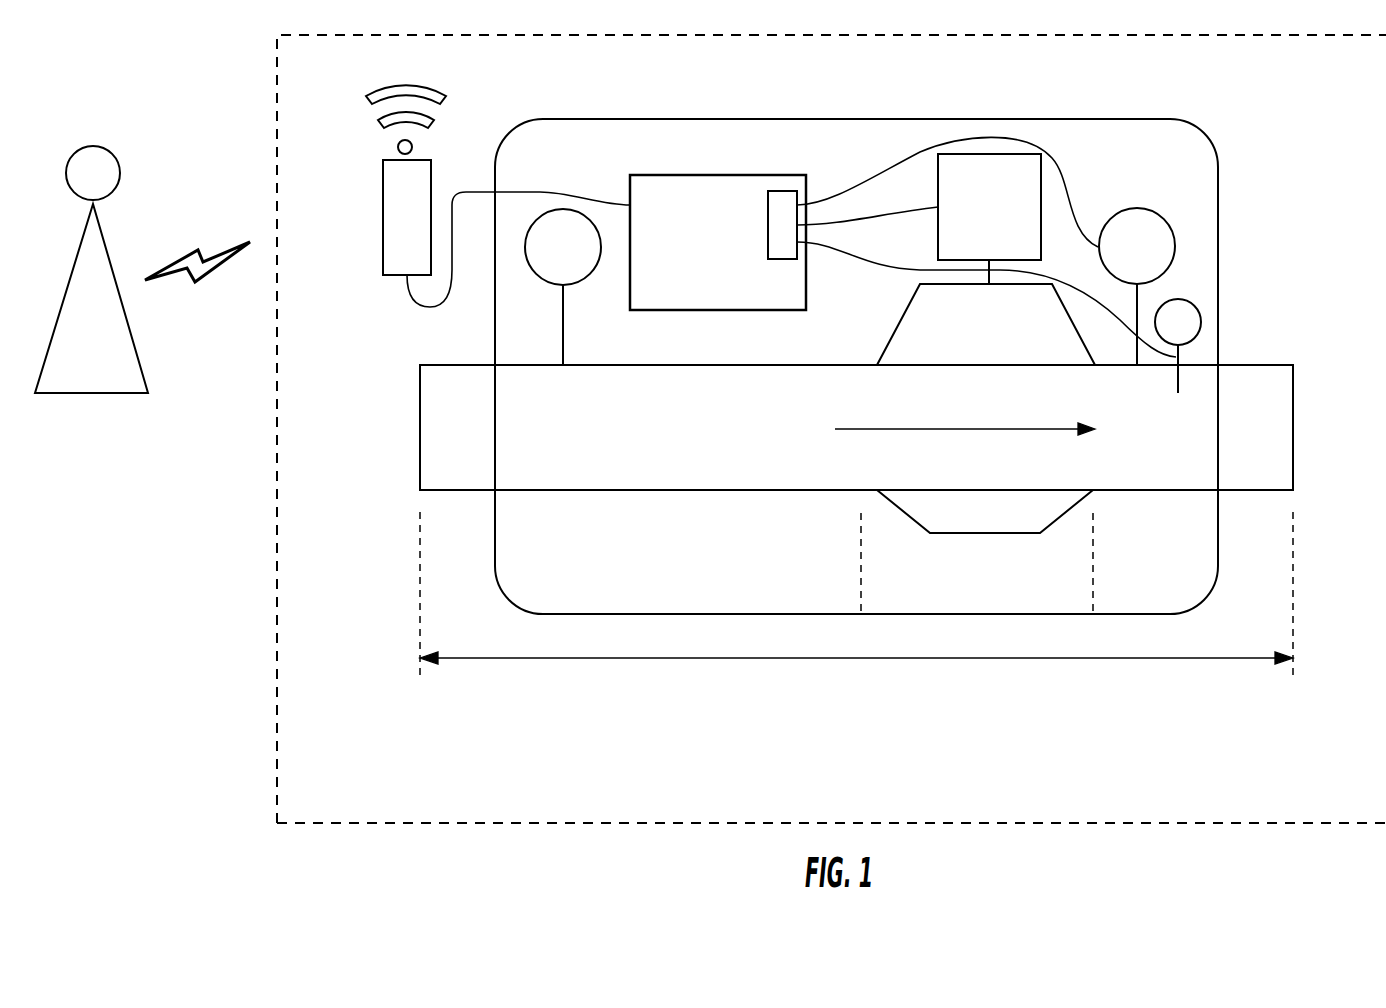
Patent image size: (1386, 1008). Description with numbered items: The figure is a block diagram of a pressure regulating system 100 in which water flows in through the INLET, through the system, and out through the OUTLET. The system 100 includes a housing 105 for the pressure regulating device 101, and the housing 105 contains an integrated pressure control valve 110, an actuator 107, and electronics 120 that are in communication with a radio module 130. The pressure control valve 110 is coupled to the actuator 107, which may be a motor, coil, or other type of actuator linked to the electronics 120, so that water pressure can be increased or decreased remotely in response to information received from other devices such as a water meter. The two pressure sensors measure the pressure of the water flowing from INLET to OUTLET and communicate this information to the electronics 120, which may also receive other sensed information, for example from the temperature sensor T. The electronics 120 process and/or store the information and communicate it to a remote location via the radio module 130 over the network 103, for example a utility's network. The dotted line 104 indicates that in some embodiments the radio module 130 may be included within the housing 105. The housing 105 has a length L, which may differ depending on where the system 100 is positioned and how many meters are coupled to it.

The pressure regulating system 100 is at (1092, 113).
The pressure regulating device 101 is at (697, 119).
The network 103 is at (75, 461).
The dotted line 104 is at (277, 513).
The housing 105 is at (1220, 185).
The actuator 107 is at (936, 219).
The pressure control valve 110 is at (862, 364).
The electronics 120 is at (697, 175).
The radio module 130 is at (350, 307).